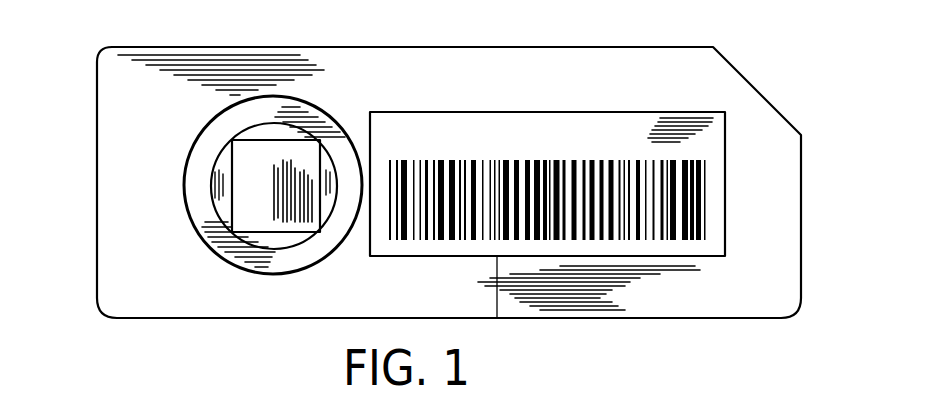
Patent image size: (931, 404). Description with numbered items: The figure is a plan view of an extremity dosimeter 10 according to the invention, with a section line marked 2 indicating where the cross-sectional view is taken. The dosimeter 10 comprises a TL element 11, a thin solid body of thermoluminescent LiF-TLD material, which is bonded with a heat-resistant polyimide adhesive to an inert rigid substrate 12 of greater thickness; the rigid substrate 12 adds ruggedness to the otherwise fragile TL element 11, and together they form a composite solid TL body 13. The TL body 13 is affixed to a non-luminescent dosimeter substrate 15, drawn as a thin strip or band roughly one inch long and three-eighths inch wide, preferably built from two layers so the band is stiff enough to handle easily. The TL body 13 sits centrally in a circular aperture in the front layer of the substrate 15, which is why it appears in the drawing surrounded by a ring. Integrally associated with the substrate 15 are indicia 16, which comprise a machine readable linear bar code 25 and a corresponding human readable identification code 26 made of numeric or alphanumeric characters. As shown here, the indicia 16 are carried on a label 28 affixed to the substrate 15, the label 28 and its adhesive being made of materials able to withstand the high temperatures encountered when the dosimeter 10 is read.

The extremity dosimeter 10 is at (169, 341).
The TL element 11 is at (265, 139).
The inert rigid substrate 12 is at (263, 250).
The composite solid TL body 13 is at (210, 216).
The dosimeter substrate 15 is at (596, 326).
The indicia 16 is at (449, 127).
The linear bar code 25 is at (712, 223).
The human readable identification code 26 is at (600, 125).
The label 28 is at (497, 318).
The section line 2- 2 is at (123, 185).